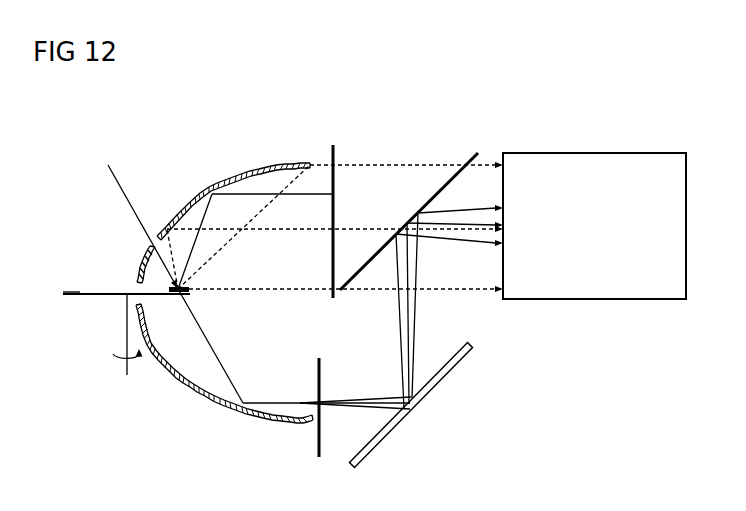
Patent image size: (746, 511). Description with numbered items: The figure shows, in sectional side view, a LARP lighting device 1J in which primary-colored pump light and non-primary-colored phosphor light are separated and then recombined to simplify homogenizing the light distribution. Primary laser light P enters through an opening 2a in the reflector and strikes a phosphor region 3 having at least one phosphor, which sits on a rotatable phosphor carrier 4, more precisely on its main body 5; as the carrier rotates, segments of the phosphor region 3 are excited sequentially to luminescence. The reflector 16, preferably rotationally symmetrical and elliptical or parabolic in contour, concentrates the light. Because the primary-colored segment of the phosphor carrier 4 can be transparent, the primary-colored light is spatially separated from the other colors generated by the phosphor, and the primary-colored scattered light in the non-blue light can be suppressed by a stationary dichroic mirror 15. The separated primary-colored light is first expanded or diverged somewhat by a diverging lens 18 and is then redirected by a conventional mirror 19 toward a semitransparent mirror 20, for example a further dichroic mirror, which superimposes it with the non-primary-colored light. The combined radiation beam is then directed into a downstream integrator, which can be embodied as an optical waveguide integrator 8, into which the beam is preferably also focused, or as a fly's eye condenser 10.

The lighting device 1J is at (498, 89).
The opening 2a is at (149, 232).
The phosphor region 3 is at (70, 292).
The phosphor carrier 4 is at (104, 316).
The main body 5 is at (108, 292).
The primary laser light P is at (117, 188).
The optical waveguide integrator 8 is at (594, 199).
The fly's eye condenser 10 is at (587, 152).
The dichroic mirror 15 is at (336, 151).
The reflector 16 is at (262, 166).
The diverging lens 18 is at (316, 444).
The conventional mirror 19 is at (458, 367).
The semitransparent mirror 20 is at (447, 183).